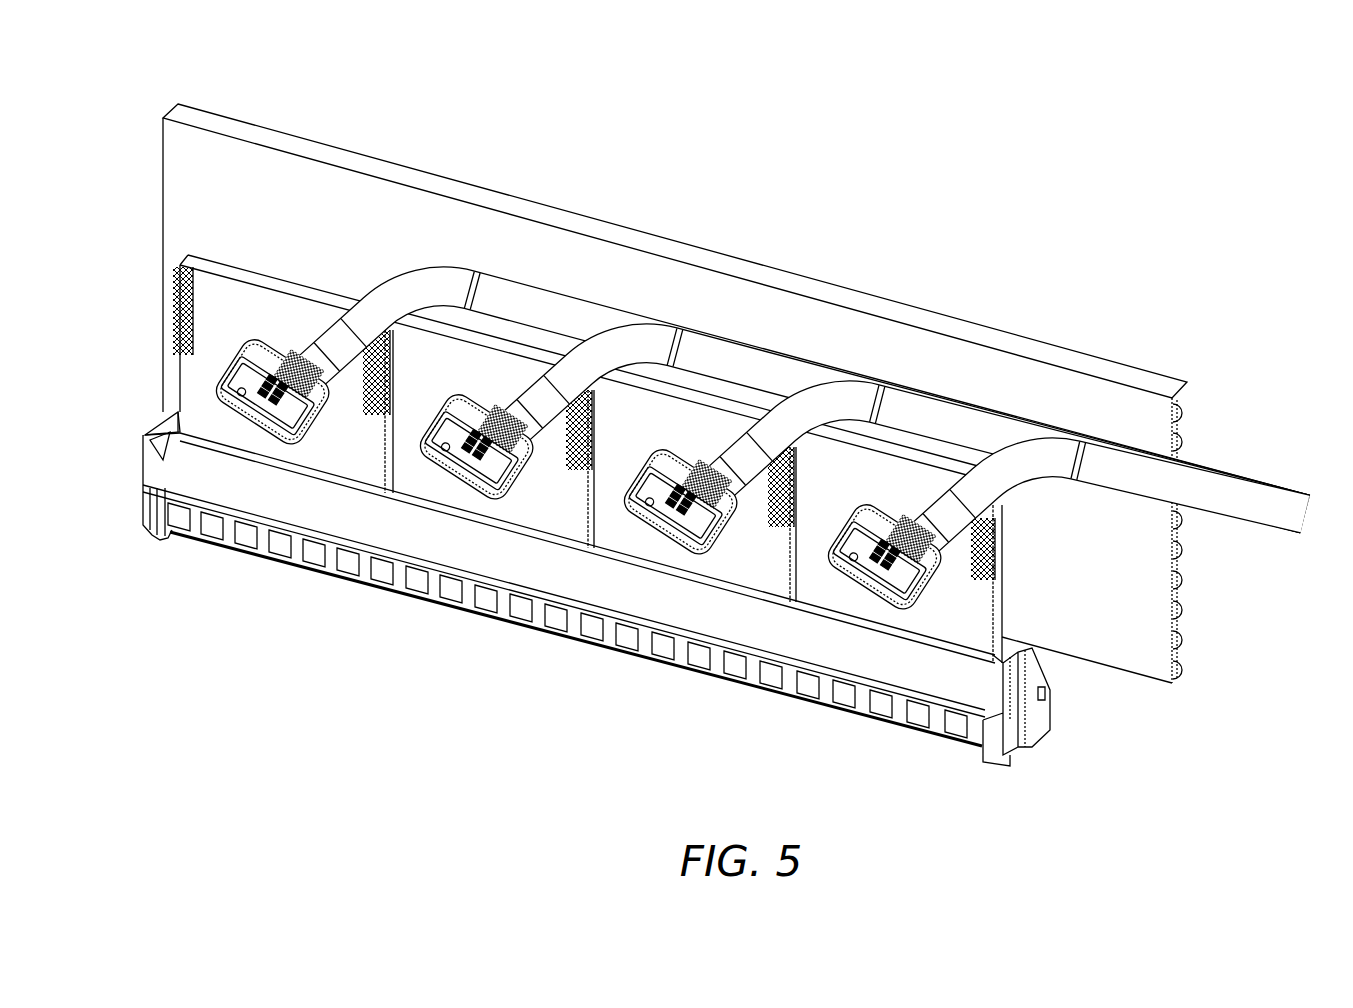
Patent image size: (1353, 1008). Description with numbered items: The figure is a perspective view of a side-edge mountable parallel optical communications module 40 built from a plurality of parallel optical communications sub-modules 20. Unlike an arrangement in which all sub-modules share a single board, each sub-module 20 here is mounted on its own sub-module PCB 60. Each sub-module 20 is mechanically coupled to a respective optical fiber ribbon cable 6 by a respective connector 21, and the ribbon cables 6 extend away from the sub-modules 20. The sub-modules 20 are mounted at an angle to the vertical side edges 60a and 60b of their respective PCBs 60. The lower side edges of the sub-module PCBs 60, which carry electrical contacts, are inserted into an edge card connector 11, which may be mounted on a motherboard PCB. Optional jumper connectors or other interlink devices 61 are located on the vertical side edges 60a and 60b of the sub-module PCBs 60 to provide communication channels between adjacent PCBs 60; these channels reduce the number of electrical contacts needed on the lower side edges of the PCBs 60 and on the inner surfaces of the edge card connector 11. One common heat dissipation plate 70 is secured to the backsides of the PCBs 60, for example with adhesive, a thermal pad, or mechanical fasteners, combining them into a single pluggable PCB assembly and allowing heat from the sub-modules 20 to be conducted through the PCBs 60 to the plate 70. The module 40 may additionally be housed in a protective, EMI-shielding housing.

The optical fiber ribbon cable 6 is at (570, 308).
The edge card connector 11 is at (1033, 718).
The parallel optical communications sub-module 20 is at (243, 343).
The connector 21 is at (292, 390).
The side-edge mountable parallel optical communications module 40 is at (1045, 178).
The sub-module PCB 60 is at (297, 455).
The vertical side edge 60a is at (181, 397).
The vertical side edge 60b is at (385, 441).
The interlink device 61 is at (176, 303).
The heat dissipation plate 70 is at (410, 172).